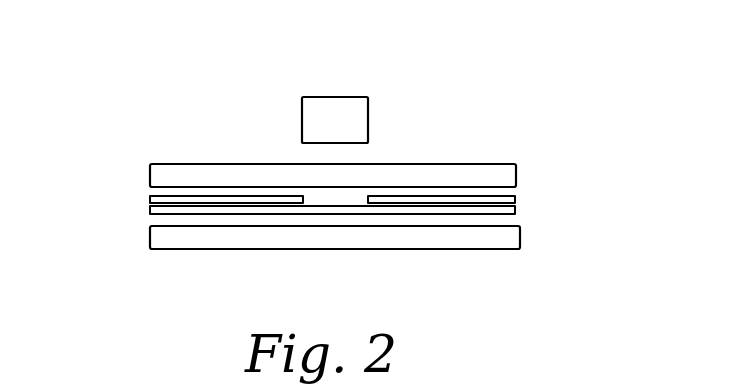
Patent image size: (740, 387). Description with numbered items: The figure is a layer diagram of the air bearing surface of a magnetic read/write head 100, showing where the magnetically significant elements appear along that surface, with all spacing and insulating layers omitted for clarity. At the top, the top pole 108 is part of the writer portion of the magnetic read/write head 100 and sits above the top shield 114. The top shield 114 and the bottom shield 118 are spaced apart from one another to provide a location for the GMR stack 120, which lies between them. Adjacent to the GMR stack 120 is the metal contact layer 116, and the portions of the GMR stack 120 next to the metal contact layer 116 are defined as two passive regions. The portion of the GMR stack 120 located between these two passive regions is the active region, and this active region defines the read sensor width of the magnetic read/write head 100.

The magnetic read/write head 100 is at (461, 112).
The top pole 108 is at (326, 106).
The top shield 114 is at (280, 171).
The metal contact layer 116 is at (150, 199).
The bottom shield 118 is at (503, 238).
The GMR stack 120 is at (515, 210).